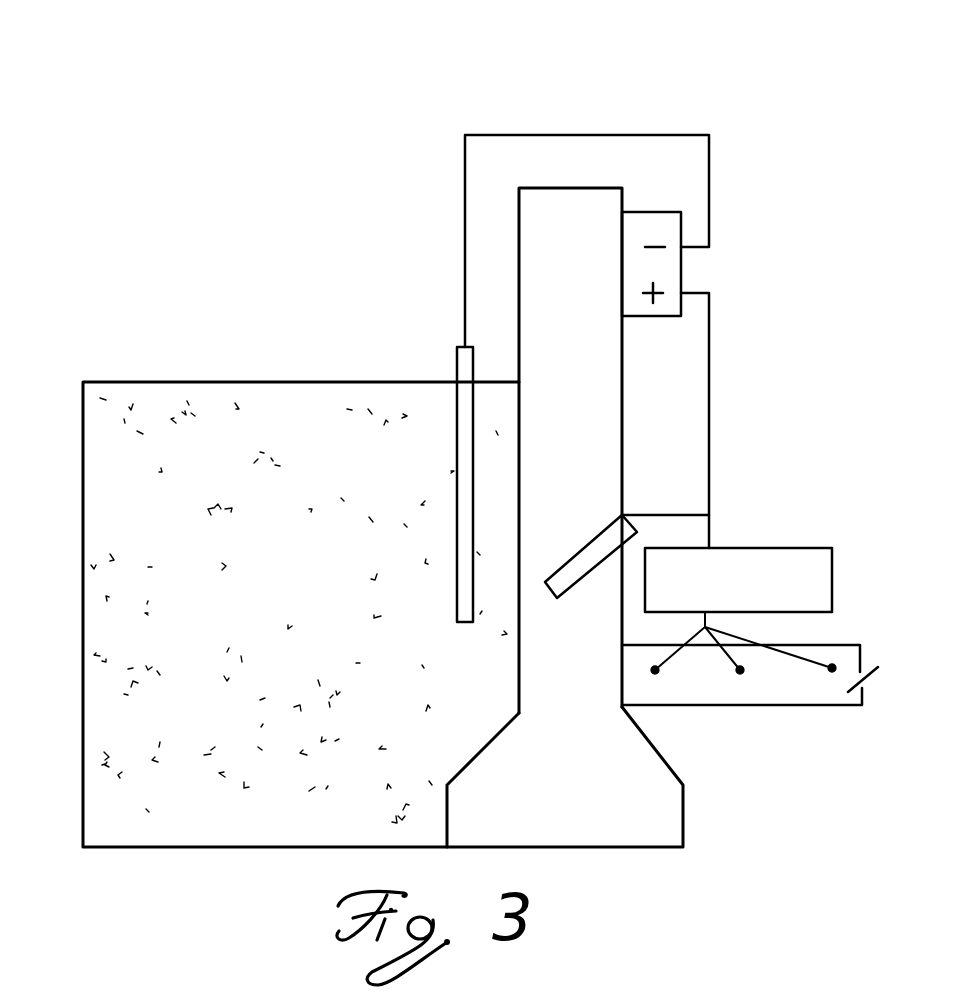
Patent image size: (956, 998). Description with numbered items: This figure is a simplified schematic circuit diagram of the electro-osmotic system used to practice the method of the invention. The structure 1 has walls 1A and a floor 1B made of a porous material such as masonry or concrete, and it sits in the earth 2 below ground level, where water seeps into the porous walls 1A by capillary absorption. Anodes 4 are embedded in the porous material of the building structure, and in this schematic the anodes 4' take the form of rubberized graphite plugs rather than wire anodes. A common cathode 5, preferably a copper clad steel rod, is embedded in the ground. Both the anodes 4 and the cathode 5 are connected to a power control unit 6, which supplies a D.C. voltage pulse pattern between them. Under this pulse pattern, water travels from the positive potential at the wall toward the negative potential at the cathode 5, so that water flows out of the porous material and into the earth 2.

The structure 1 is at (573, 225).
The walls 1A is at (582, 448).
The floor 1B is at (768, 693).
The earth 2 is at (198, 398).
The anodes 4 is at (781, 611).
The anodes 4' is at (591, 599).
The common cathode 5 is at (457, 493).
The power control unit 6 is at (672, 275).